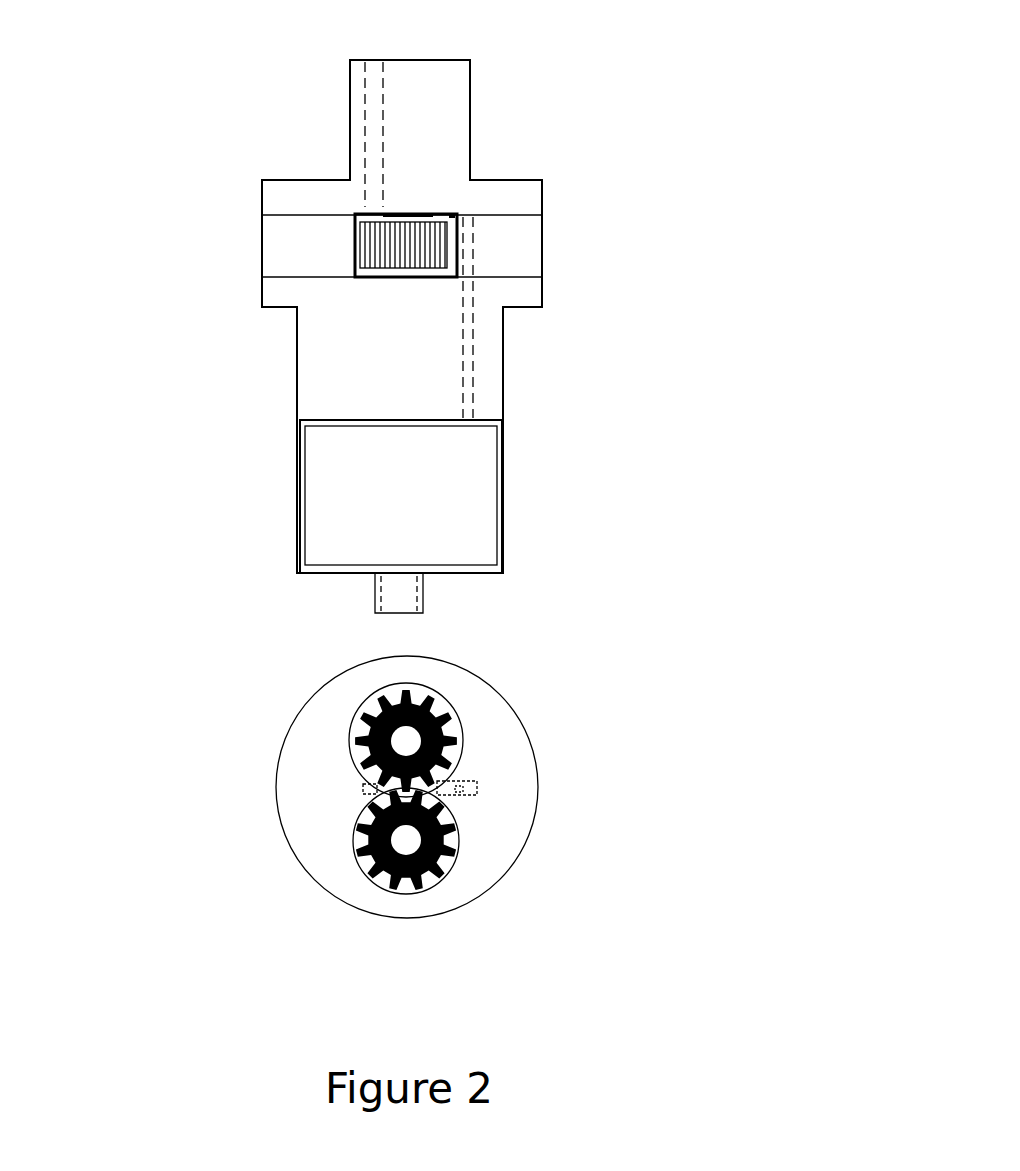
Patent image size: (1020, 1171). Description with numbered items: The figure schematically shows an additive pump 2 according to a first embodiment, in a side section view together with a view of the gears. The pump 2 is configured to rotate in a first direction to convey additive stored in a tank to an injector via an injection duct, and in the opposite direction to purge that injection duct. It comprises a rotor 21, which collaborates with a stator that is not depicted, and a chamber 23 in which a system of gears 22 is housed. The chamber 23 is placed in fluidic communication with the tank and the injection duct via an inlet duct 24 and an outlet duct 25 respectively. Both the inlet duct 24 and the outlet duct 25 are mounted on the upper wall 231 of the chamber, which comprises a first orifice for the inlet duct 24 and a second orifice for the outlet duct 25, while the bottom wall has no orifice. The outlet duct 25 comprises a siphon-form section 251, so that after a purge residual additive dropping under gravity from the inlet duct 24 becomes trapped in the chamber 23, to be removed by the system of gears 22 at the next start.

The pump 2 is at (687, 108).
The rotor 21 is at (487, 503).
The system of gears 22 is at (377, 245).
The chamber 23 is at (357, 278).
The upper wall 231 is at (408, 208).
The inlet duct 24 is at (377, 113).
The outlet duct 25 is at (467, 392).
The siphon-form section 251 is at (468, 208).